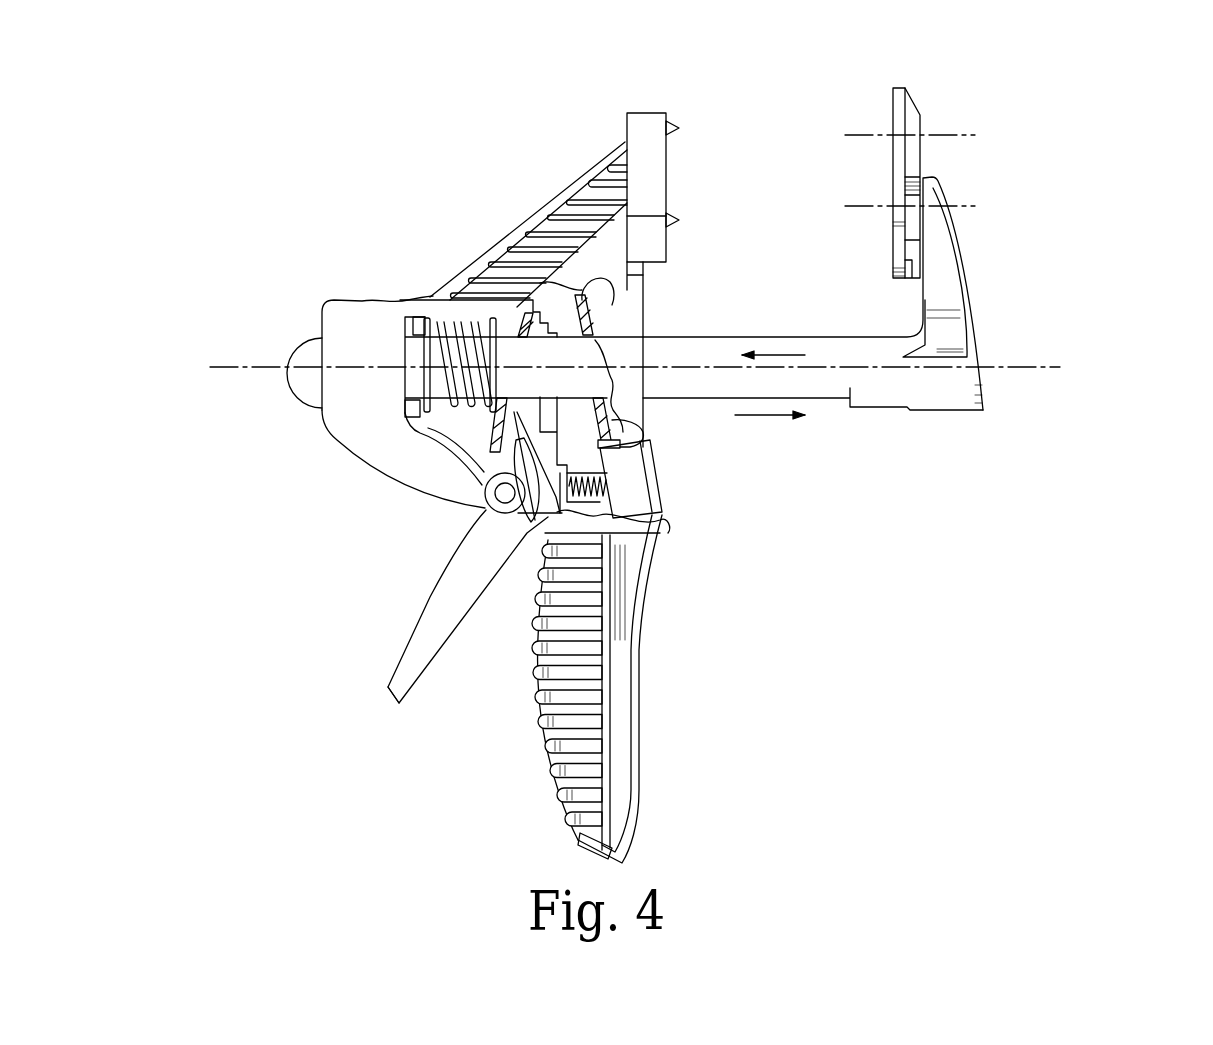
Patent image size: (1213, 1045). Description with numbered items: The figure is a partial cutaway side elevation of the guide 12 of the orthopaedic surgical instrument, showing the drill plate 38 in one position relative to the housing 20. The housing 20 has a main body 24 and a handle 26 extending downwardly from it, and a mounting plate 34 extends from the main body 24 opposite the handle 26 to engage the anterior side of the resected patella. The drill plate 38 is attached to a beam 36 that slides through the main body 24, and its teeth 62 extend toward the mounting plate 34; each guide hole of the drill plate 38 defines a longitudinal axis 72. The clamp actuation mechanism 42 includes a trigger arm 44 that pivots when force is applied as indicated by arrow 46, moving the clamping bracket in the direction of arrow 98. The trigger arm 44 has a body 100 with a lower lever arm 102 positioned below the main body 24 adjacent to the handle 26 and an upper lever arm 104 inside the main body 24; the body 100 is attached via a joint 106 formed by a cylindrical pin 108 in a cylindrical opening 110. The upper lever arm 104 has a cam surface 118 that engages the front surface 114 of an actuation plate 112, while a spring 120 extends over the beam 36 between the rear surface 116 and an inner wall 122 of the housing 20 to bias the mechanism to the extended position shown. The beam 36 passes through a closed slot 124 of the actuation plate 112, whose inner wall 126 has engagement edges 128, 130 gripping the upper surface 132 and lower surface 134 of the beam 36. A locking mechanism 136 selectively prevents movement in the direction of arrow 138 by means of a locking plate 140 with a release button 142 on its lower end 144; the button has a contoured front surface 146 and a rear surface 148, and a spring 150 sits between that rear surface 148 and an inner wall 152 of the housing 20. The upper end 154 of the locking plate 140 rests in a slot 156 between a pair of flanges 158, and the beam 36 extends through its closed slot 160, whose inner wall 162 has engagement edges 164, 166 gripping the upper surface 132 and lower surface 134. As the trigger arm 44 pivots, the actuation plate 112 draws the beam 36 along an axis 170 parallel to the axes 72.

The guide 12 is at (1107, 150).
The housing 20 is at (212, 302).
The main body 24 is at (363, 298).
The handle 26 is at (620, 699).
The mounting plate 34 is at (643, 128).
The beam 36 is at (870, 405).
The drill plate 38 is at (910, 105).
The clamp actuation mechanism 42 is at (305, 476).
The trigger arm 44 is at (412, 598).
The arrow 46 is at (398, 662).
The teeth 62 is at (892, 178).
The longitudinal axis 72 is at (857, 135).
The arrow 98 is at (778, 353).
The body 100 is at (467, 582).
The lower lever arm 102 is at (410, 677).
The upper lever arm 104 is at (543, 480).
The joint 106 is at (487, 493).
The cylindrical pin 108 is at (482, 500).
The cylindrical opening 110 is at (508, 503).
The actuation plate 112 is at (530, 265).
The front surface 114 is at (470, 477).
The rear surface 116 is at (503, 296).
The cam surface 118 is at (535, 432).
The spring 120 is at (413, 317).
The inner wall 122 is at (420, 432).
The closed slot 124 is at (497, 323).
The inner wall 126 is at (533, 337).
The engagement edge 128 is at (548, 338).
The engagement edge 130 is at (503, 399).
The upper surface 132 is at (436, 297).
The lower surface 134 is at (467, 423).
The locking mechanism 136 is at (705, 500).
The arrow 138 is at (770, 418).
The locking plate 140 is at (628, 410).
The release button 142 is at (660, 523).
The lower end 144 is at (647, 431).
The contoured front surface 146 is at (654, 488).
The rear surface 148 is at (593, 517).
The spring 150 is at (583, 517).
The inner wall 152 is at (573, 517).
The upper end 154 is at (594, 284).
The slot 156 is at (610, 282).
The flanges 158 is at (600, 289).
The closed slot 160 is at (605, 334).
The inner wall 162 is at (592, 405).
The engagement edge 164 is at (607, 356).
The engagement edge 166 is at (602, 388).
The axis 170 is at (1046, 365).